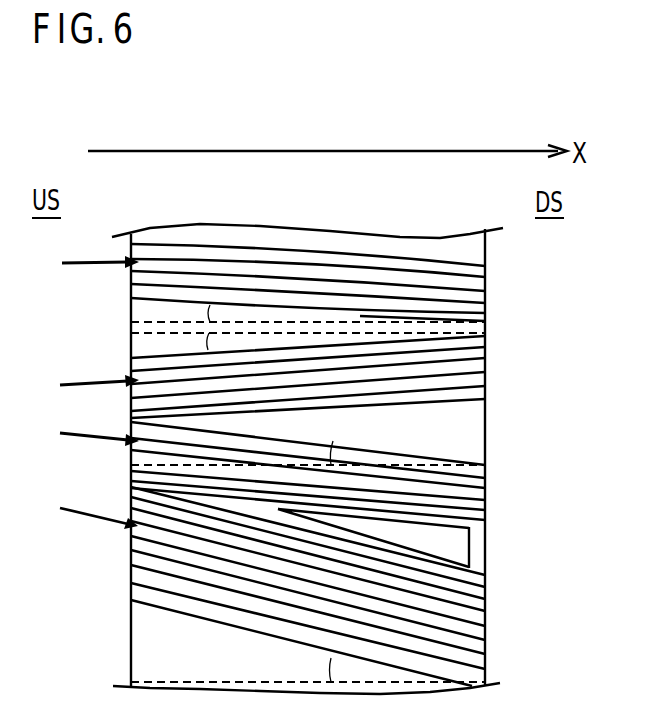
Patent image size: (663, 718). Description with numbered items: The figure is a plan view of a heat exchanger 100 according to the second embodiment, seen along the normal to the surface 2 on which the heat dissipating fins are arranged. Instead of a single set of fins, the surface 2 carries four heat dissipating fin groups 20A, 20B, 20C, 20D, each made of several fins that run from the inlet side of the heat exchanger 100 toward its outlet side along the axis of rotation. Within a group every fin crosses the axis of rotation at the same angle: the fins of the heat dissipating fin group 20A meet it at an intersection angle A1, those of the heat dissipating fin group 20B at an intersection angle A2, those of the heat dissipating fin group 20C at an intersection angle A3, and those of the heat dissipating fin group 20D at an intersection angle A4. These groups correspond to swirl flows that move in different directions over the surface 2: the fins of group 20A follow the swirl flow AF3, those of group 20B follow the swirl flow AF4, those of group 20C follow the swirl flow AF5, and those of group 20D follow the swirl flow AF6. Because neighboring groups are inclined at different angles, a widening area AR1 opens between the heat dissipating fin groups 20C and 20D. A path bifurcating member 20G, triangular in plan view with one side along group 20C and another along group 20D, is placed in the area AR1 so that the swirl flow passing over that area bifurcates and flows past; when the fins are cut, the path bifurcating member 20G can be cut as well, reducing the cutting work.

The heat exchanger 100 is at (338, 205).
The heat dissipating fin group 20A is at (495, 289).
The heat dissipating fin group 20B is at (495, 357).
The heat dissipating fin group 20C is at (495, 489).
The heat dissipating fin group 20D is at (495, 616).
The path bifurcating member 20G is at (457, 557).
The area AR1 is at (478, 522).
The surface 2 is at (467, 450).
The swirl flow AF3 is at (81, 262).
The swirl flow AF4 is at (81, 388).
The swirl flow AF5 is at (81, 435).
The swirl flow AF6 is at (80, 513).
The intersection angle A1 is at (208, 313).
The intersection angle A2 is at (206, 345).
The intersection angle A3 is at (333, 441).
The intersection angle A4 is at (330, 658).